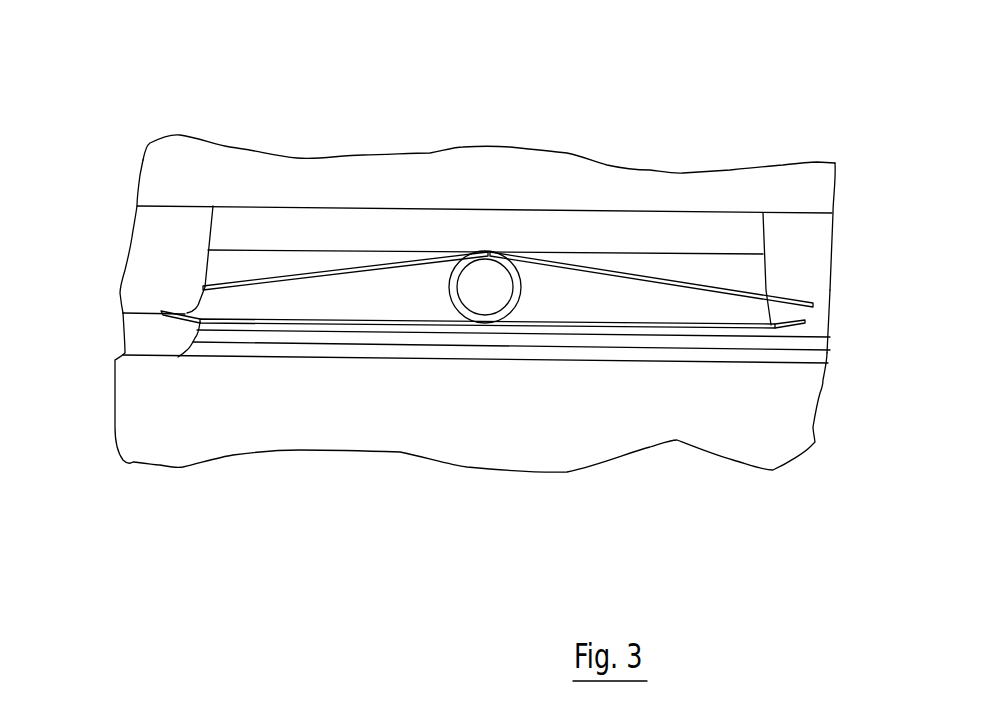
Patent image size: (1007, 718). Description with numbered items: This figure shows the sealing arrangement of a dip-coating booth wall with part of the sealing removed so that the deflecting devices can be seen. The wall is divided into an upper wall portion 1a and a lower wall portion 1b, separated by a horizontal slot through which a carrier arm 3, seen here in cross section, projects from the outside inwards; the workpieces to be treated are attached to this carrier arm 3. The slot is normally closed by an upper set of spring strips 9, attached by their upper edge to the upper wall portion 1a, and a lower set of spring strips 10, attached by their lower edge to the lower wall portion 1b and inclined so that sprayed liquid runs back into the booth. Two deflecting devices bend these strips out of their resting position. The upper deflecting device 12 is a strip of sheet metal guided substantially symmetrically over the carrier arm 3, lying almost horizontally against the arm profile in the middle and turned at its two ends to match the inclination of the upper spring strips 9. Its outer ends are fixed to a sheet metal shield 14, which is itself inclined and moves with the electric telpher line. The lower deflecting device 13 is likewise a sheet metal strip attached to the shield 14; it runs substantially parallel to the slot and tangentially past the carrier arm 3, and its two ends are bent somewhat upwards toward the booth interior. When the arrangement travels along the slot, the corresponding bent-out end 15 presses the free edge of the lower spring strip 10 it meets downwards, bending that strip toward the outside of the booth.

The upper wall portion 1a is at (322, 408).
The lower wall portion 1b is at (425, 172).
The carrier arm 3 is at (497, 323).
The upper spring strips 9 is at (160, 240).
The lower spring strips 10 is at (152, 347).
The upper deflecting device 12 is at (252, 287).
The lower deflecting device 13 is at (705, 327).
The sheet metal shield 14 is at (725, 272).
The bent-out end 15 is at (177, 310).